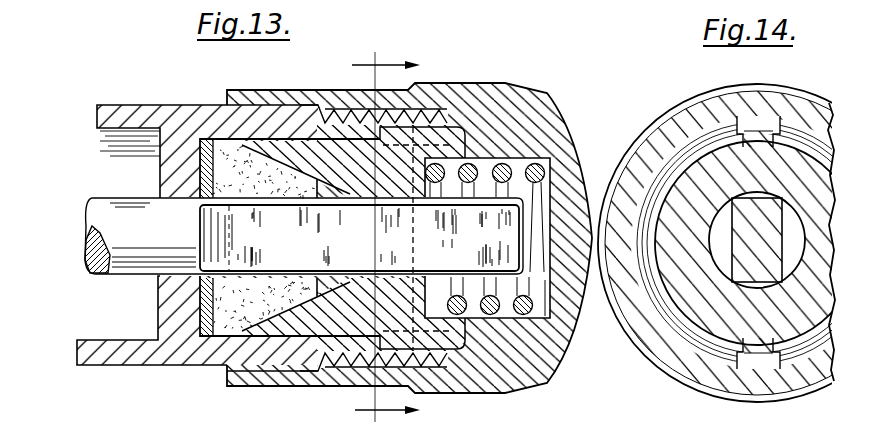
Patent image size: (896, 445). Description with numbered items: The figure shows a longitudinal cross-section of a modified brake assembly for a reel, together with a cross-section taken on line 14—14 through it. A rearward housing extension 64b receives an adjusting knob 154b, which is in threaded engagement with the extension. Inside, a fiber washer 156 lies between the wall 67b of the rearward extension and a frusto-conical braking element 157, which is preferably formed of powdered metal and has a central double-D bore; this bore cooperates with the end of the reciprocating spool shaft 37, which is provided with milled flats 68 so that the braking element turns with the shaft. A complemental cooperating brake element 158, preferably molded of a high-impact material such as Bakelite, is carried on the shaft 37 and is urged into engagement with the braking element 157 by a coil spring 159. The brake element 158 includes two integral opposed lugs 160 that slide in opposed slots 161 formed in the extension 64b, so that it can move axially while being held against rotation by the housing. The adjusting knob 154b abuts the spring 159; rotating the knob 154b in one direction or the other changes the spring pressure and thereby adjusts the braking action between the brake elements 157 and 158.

In FIG. 13, the rearward housing extension 64b is at (185, 66).
In FIG. 13, the wall 67b is at (160, 305).
In FIG. 13, the reciprocating spool shaft 37 is at (127, 205).
In FIG. 14, the reciprocating spool shaft 37 is at (705, 318).
In FIG. 13, the milled flats 68 is at (345, 253).
In FIG. 14, the milled flats 68 is at (742, 262).
In FIG. 13, the adjusting knob 154b is at (557, 122).
In FIG. 14, the adjusting knob 154b is at (718, 90).
In FIG. 13, the fiber washer 156 is at (197, 340).
In FIG. 13, the frusto-conical braking element 157 is at (210, 338).
In FIG. 13, the complemental cooperating brake element 158 is at (293, 345).
In FIG. 14, the complemental cooperating brake element 158 is at (690, 187).
In FIG. 13, the coil spring 159 is at (527, 312).
In FIG. 13, the lugs 160 is at (435, 345).
In FIG. 14, the lugs 160 is at (762, 133).
In FIG. 13, the slots 161 is at (377, 130).
In FIG. 14, the slots 161 is at (755, 117).
In FIG. 13, the section line 14 is at (371, 238).